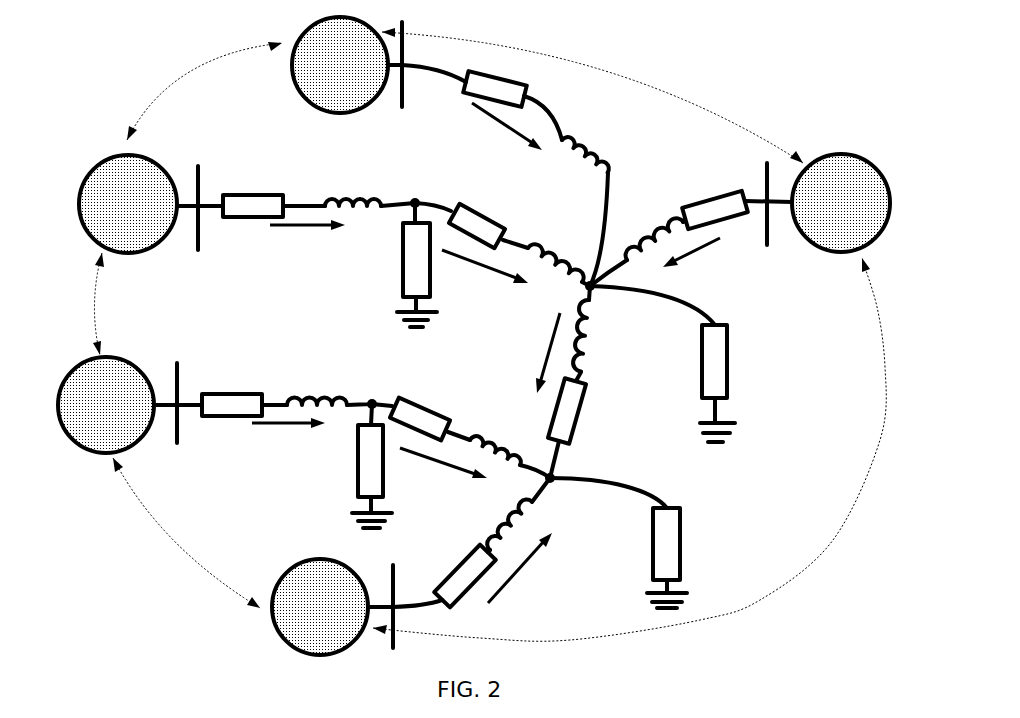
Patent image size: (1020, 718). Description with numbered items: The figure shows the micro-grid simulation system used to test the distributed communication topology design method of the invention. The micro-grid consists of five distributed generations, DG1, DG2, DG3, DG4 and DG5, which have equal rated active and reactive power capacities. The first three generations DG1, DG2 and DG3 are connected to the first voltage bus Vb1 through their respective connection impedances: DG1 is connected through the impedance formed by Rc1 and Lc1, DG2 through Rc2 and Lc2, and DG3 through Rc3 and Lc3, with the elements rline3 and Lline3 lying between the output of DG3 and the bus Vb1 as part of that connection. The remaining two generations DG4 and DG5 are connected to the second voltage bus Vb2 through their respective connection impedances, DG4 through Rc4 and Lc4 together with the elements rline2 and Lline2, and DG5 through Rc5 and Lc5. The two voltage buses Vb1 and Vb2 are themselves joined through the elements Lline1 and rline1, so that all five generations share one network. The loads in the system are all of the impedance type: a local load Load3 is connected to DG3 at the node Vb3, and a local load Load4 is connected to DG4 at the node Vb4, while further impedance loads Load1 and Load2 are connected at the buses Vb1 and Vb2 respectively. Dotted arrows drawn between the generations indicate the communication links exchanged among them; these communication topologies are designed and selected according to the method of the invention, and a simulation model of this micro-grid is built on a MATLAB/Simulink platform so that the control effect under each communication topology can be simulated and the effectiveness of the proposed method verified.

The distributed generation DG1 is at (828, 203).
The distributed generation DG2 is at (347, 65).
The distributed generation DG3 is at (138, 204).
The distributed generation DG4 is at (117, 405).
The distributed generation DG5 is at (332, 607).
The connection impedance Rc1 is at (650, 221).
The connection impedance Rc2 is at (502, 77).
The connection impedance Rc3 is at (253, 189).
The connection impedance Rc4 is at (232, 386).
The connection impedance Rc5 is at (453, 565).
The connection impedance Lc1 is at (715, 192).
The connection impedance Lc2 is at (597, 152).
The connection impedance Lc3 is at (353, 183).
The connection impedance Lc4 is at (317, 380).
The connection impedance Lc5 is at (500, 516).
The line resistance 1 rline1 is at (590, 412).
The line resistance 2 rline2 is at (432, 401).
The line resistance 3 rline3 is at (492, 213).
The line inductance 1 Lline1 is at (606, 337).
The line inductance 2 Lline2 is at (510, 437).
The line inductance 3 Lline3 is at (568, 250).
The voltage bus 1 Vb1 is at (629, 275).
The voltage bus 2 Vb2 is at (571, 501).
The bus voltage node 3 Vb3 is at (418, 190).
The bus voltage node 4 Vb4 is at (377, 386).
The impedance type load Load1 is at (759, 383).
The impedance type load Load2 is at (710, 558).
The local load Load3 is at (371, 265).
The local load Load4 is at (325, 466).